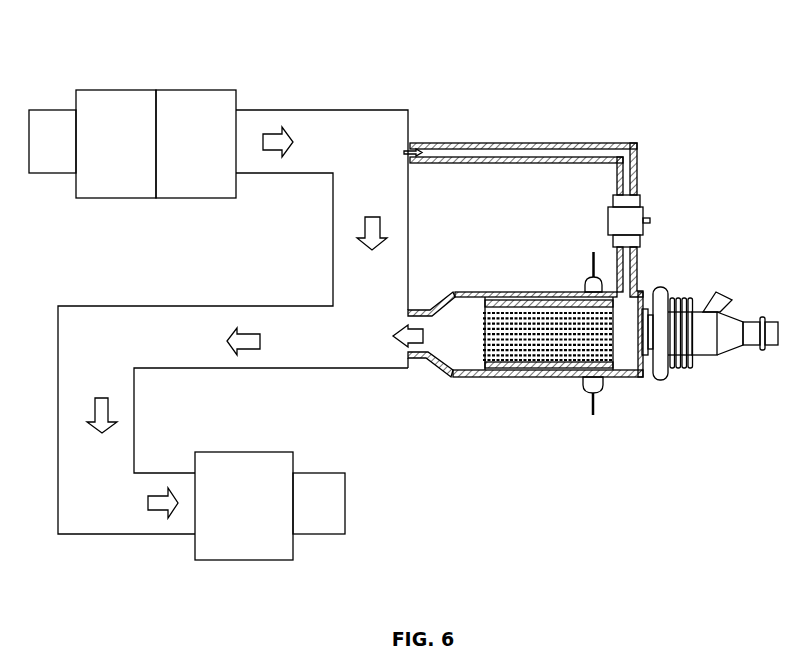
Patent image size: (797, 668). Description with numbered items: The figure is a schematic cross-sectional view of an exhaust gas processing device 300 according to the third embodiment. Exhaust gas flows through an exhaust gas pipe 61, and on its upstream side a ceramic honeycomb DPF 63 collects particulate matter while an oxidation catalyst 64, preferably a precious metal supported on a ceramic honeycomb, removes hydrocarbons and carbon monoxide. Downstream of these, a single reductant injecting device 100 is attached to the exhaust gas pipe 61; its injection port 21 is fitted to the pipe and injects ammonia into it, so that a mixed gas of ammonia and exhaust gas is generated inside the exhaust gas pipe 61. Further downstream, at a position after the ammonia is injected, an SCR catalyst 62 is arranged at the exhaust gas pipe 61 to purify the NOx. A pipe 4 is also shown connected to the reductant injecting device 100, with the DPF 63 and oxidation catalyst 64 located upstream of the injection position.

The exhaust gas processing device 300 is at (451, 588).
The oxidation catalyst 64 is at (117, 120).
The DPF 63 is at (195, 118).
The exhaust gas pipe 61 is at (377, 122).
The SCR catalyst 62 is at (237, 488).
The injection port 21 is at (408, 352).
The cooling fluid pipe 4 is at (563, 143).
The reductant injecting device 100 is at (667, 268).